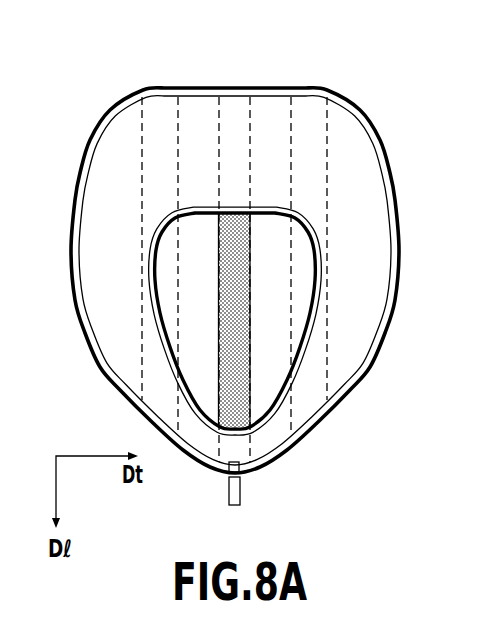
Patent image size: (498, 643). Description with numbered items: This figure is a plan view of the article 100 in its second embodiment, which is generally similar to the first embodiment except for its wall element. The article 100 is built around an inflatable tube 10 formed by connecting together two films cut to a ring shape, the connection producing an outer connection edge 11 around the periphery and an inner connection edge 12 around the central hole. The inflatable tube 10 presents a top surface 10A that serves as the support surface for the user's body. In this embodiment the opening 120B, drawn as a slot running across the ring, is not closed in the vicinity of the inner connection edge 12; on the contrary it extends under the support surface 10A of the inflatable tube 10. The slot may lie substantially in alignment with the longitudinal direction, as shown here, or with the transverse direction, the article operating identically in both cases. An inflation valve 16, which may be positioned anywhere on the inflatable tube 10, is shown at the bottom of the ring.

The article 100 is at (220, 259).
The inflatable tube 10 is at (220, 243).
The top surface 10A is at (348, 155).
The outer connection edge 11 is at (80, 182).
The inner connection edge 12 is at (198, 207).
The opening 120B is at (232, 382).
The inflation valve 16 is at (247, 490).